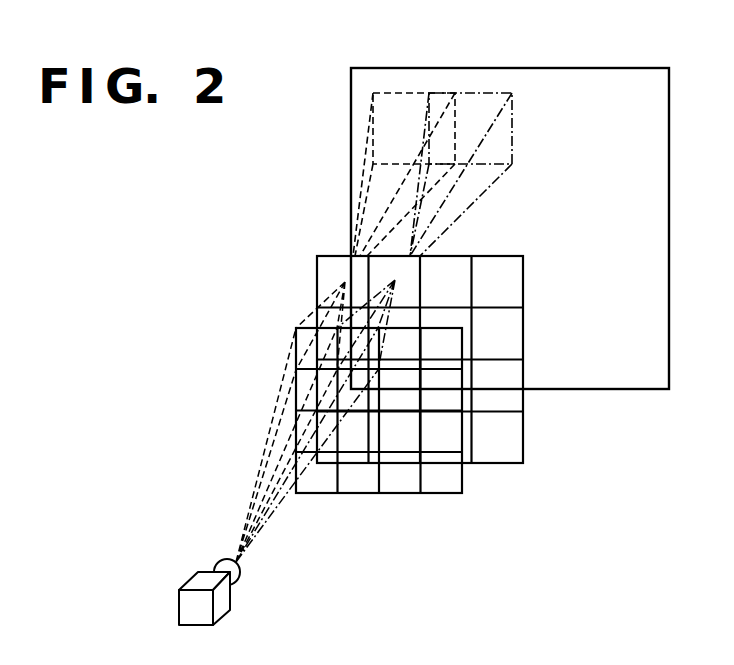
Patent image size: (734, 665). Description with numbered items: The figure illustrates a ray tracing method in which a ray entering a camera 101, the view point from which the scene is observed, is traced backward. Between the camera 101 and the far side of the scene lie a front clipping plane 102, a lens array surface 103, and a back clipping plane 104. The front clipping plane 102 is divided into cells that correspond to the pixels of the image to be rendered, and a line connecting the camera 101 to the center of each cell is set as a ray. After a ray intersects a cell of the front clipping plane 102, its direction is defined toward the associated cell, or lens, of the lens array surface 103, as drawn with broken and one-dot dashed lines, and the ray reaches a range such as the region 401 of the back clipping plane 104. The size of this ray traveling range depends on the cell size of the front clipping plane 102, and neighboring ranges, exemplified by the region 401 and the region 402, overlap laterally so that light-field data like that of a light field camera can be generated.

The camera 101 is at (193, 575).
The front clipping plane 102 is at (306, 326).
The lens array surface 103 is at (333, 256).
The back clipping plane 104 is at (622, 68).
The region 401 is at (390, 92).
The region 402 is at (482, 92).